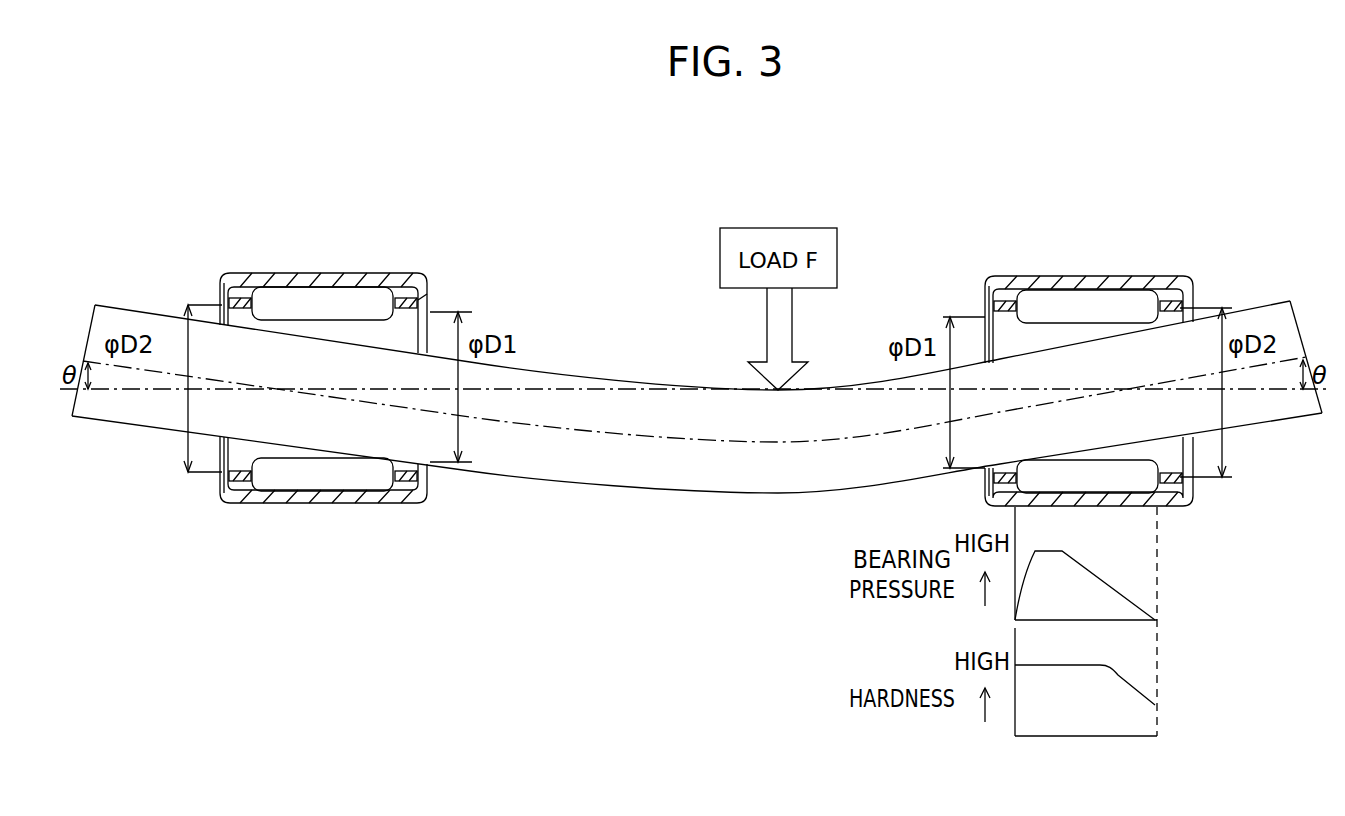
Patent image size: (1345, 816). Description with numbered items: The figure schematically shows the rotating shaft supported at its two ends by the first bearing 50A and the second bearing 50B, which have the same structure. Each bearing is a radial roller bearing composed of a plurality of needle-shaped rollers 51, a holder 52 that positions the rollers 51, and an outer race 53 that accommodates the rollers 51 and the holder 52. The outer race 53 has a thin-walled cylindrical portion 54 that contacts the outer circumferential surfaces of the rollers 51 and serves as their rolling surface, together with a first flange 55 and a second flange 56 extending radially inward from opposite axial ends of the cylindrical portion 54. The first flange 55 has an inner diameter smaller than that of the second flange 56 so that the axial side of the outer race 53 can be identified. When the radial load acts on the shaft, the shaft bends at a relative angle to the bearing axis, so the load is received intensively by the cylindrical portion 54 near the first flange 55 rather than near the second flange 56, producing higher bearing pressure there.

The first bearing 50A is at (270, 510).
The second bearing 50B is at (1140, 270).
The rollers 51 is at (353, 481).
The holder 52 is at (405, 480).
The outer race 53 is at (305, 497).
The cylindrical portion 54 is at (375, 283).
The first flange 55 is at (421, 300).
The second flange 56 is at (224, 291).